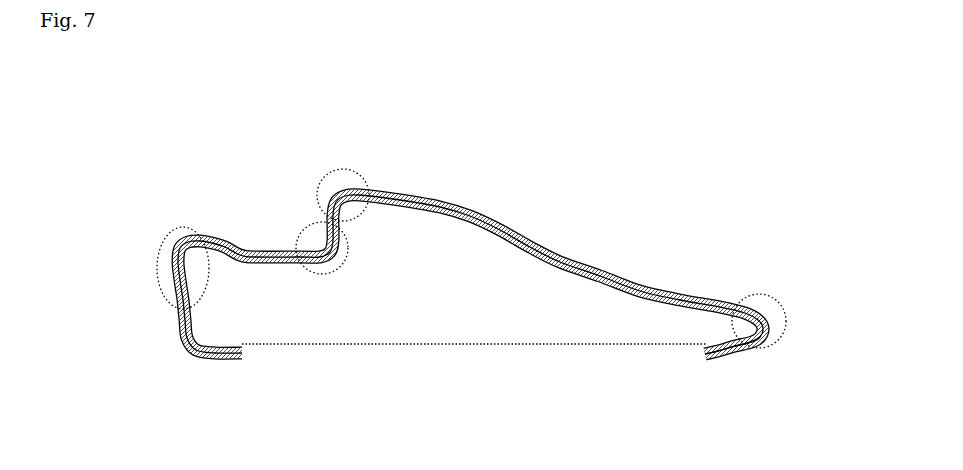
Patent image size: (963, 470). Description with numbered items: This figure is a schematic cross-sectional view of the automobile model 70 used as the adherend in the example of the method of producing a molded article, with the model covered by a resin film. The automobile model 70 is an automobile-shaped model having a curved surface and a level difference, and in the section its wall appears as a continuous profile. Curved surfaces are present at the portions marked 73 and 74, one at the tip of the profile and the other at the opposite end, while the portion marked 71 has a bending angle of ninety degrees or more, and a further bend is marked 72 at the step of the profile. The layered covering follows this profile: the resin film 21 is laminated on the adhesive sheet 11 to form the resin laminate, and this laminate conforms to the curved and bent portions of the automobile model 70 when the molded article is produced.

The automobile model 70 is at (634, 142).
The portion having a bending angle of 90° or more 71 is at (343, 272).
The curved portion 72 is at (335, 170).
The curved surface portion 73 is at (785, 336).
The curved surface portion 74 is at (168, 230).
The adhesive sheet 11 is at (700, 345).
The resin film 21 is at (702, 350).